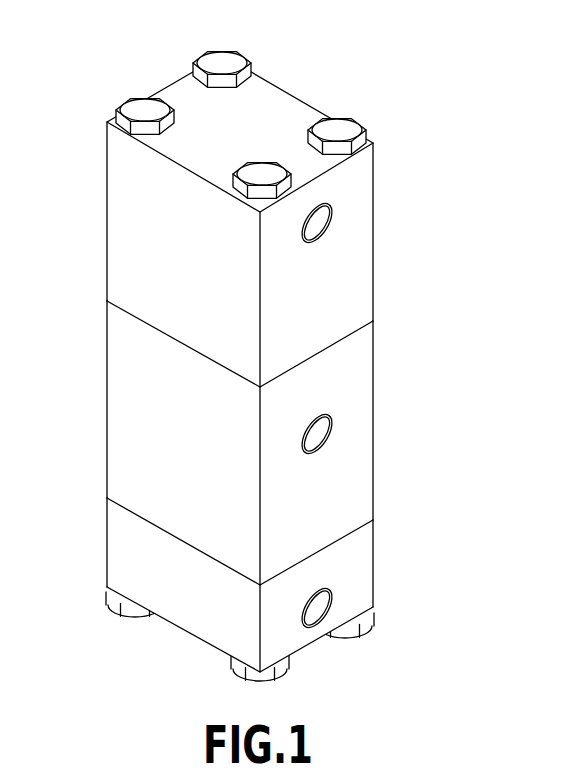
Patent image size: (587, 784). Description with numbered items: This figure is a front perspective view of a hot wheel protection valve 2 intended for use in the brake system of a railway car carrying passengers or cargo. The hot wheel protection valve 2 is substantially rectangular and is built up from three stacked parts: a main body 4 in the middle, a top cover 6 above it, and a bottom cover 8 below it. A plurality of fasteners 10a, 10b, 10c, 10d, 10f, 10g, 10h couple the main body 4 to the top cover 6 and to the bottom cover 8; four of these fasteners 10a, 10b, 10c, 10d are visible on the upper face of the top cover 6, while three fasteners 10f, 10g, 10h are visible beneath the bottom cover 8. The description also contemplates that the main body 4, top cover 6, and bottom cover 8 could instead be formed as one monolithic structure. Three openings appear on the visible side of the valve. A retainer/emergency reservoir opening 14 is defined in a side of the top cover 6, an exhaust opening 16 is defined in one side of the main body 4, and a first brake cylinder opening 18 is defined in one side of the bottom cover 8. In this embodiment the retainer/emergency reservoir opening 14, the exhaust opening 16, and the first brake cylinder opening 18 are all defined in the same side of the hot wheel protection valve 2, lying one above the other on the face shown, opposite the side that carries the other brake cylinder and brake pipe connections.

The hot wheel protection valve 2 is at (435, 170).
The main body 4 is at (366, 390).
The top cover 6 is at (366, 289).
The bottom cover 8 is at (364, 574).
The fastener 10a is at (223, 60).
The fastener 10b is at (337, 131).
The fastener 10c is at (254, 176).
The fastener 10d is at (131, 107).
The fastener 10f is at (352, 627).
The fastener 10g is at (273, 671).
The fastener 10h is at (132, 606).
The retainer/emergency reservoir opening 14 is at (316, 226).
The exhaust opening 16 is at (317, 437).
The first brake cylinder opening 18 is at (319, 602).